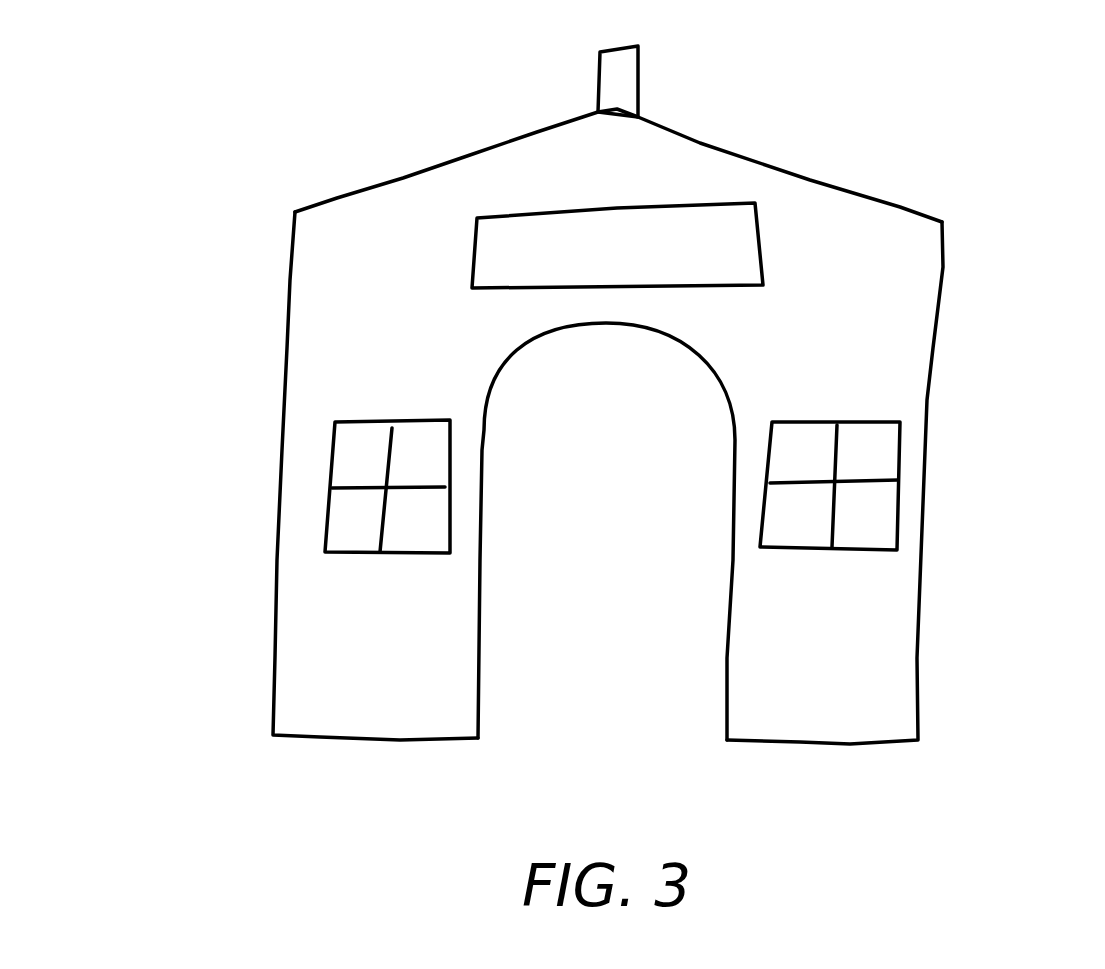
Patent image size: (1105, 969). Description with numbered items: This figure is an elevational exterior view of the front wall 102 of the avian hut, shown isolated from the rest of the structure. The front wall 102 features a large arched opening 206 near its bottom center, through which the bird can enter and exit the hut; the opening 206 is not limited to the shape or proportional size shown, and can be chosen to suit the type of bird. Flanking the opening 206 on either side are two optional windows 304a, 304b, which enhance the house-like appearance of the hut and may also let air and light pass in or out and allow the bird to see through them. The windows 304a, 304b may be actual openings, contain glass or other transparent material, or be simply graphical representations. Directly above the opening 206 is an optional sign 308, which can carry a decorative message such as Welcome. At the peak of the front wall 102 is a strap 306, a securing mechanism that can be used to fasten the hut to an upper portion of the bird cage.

The front wall 102 is at (247, 372).
The opening 206 is at (555, 708).
The window 304a is at (362, 555).
The window 304b is at (870, 555).
The strap 306 is at (628, 73).
The sign 308 is at (740, 265).